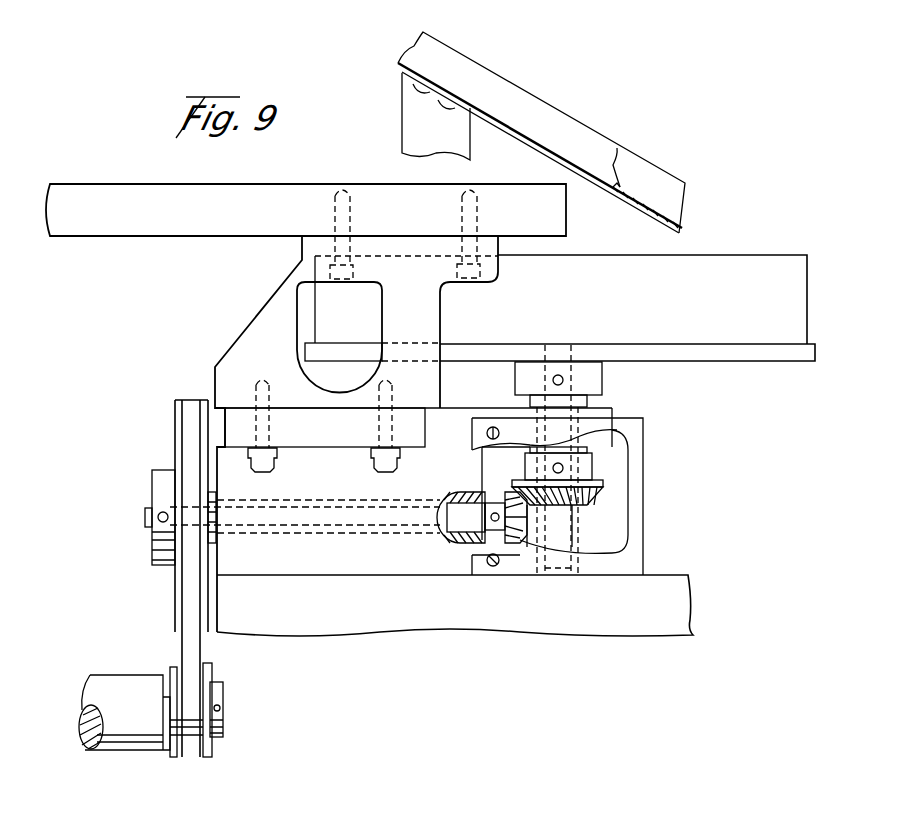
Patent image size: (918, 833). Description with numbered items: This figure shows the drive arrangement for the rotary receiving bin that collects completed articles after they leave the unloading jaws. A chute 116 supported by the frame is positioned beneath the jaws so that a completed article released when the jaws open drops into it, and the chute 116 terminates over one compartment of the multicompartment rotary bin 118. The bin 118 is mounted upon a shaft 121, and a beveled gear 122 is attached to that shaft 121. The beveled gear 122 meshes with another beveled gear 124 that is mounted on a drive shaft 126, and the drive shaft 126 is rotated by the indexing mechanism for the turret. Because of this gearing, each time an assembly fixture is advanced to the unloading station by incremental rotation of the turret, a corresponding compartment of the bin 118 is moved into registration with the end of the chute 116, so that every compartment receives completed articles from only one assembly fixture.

The chute 116 is at (547, 108).
The multicompartment rotary bin 118 is at (754, 236).
The shaft 121 is at (562, 428).
The beveled gear 122 is at (603, 488).
The beveled gear 124 is at (515, 540).
The drive shaft 126 is at (360, 520).